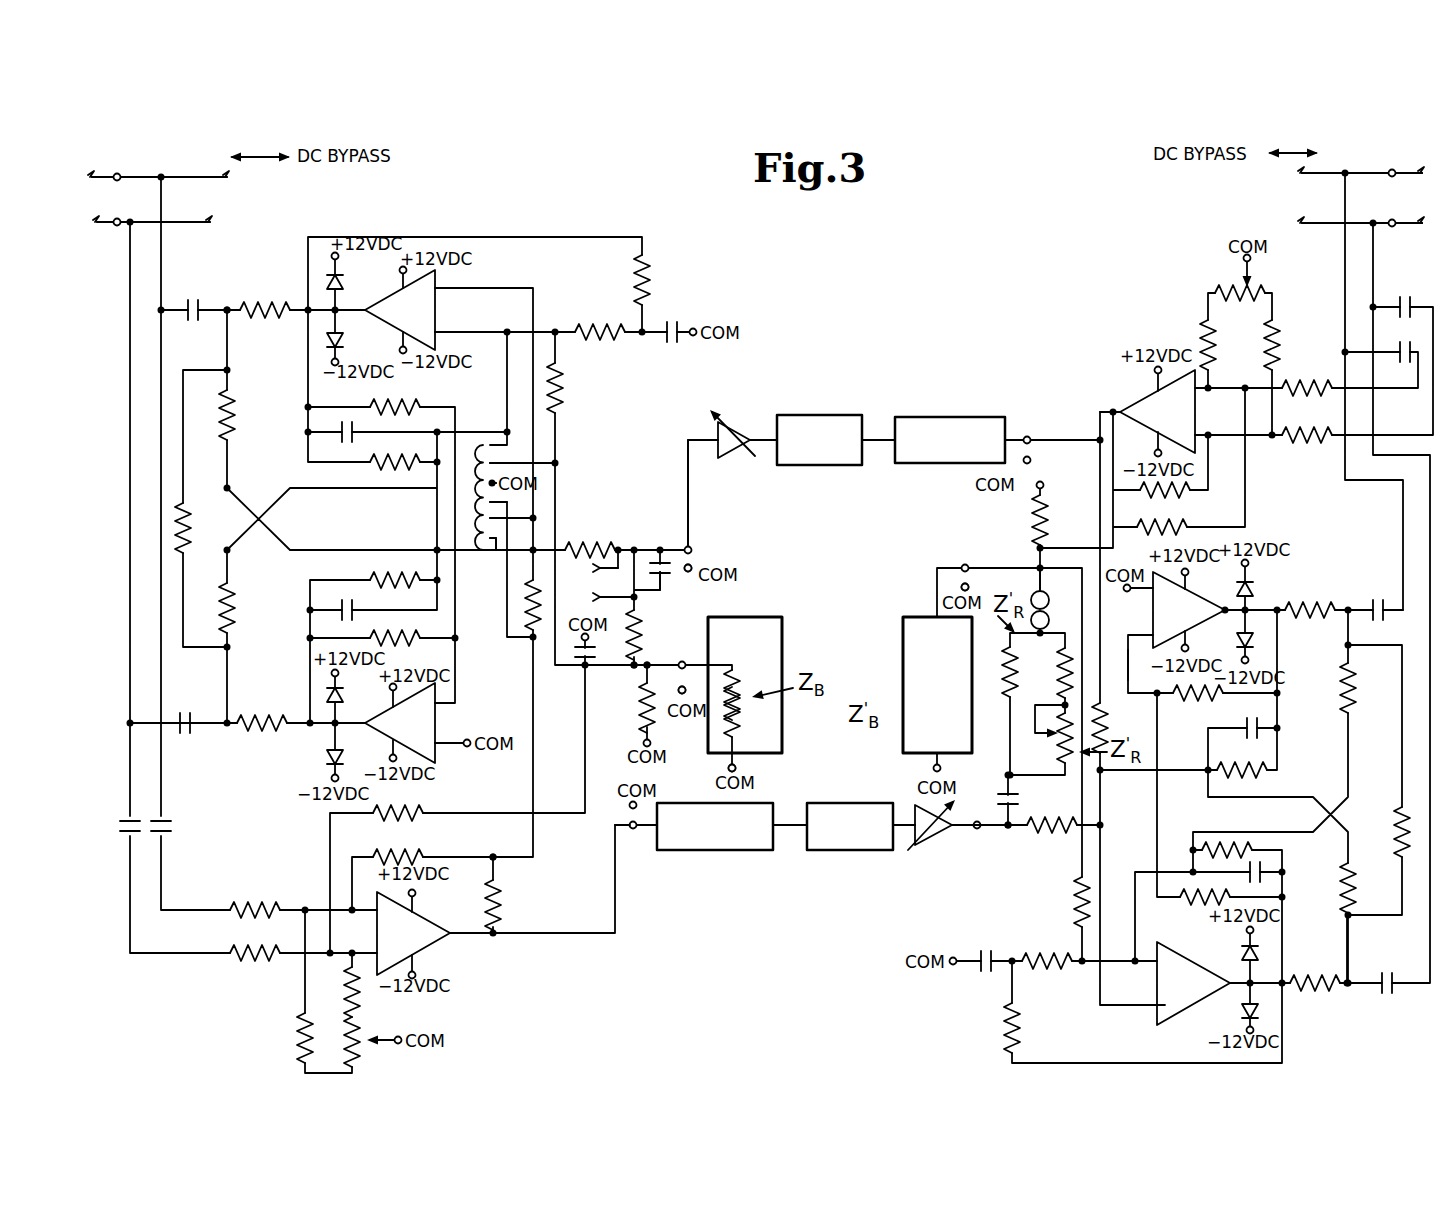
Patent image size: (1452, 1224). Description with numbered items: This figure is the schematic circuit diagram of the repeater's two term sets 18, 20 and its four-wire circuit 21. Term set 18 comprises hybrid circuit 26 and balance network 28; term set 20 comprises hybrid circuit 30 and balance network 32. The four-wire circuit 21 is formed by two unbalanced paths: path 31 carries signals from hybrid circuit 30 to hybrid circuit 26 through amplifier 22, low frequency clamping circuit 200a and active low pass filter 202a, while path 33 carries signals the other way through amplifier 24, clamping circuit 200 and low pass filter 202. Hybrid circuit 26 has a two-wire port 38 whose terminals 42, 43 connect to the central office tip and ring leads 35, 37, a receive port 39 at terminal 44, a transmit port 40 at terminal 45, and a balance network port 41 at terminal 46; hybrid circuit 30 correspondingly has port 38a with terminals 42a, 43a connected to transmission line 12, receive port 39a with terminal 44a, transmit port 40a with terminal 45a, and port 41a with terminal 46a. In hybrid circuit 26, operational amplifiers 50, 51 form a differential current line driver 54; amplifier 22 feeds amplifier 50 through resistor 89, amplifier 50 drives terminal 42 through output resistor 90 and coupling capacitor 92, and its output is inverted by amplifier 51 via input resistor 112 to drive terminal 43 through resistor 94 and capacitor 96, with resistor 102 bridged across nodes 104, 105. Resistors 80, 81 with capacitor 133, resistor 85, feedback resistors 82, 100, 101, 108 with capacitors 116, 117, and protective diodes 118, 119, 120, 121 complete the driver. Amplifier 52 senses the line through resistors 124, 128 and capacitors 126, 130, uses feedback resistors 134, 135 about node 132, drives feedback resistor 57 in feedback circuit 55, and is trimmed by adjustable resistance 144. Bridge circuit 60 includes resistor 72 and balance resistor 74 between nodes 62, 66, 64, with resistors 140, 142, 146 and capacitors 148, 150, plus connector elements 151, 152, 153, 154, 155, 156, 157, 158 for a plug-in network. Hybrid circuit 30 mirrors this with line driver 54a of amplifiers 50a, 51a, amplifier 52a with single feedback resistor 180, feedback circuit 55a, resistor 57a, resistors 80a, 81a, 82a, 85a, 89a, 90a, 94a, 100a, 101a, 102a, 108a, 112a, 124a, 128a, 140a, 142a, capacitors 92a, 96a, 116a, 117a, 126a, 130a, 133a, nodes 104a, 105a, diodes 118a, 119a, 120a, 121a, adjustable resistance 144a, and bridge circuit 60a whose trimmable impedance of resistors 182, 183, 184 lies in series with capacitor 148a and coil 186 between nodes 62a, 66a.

The two-wire transmission line 12 is at (1406, 222).
The term set 18 is at (416, 221).
The term set 20 is at (1130, 328).
The four-wire circuit 21 is at (783, 795).
The amplifier 22 is at (743, 418).
The amplifier 24 is at (926, 845).
The hybrid circuit 26 is at (454, 772).
The balance network 28 is at (790, 620).
The hybrid circuit 30 is at (1290, 1006).
The signal transmission path 31 is at (692, 506).
The balance network 32 is at (896, 603).
The signal transmission path 33 is at (975, 822).
The tip lead 35 is at (112, 174).
The ring lead 37 is at (114, 226).
The two-wire port 38 is at (126, 211).
The two-wire port 38a is at (1392, 209).
The receive port 39 is at (703, 558).
The receive port 39a is at (970, 833).
The transmit port 40 is at (637, 838).
The transmit port 40a is at (1030, 431).
The balance network port 41 is at (675, 677).
The balance network port 41a is at (960, 576).
The terminal 42 is at (118, 175).
The terminal 42a is at (1388, 170).
The terminal 43 is at (130, 226).
The terminal 43a is at (1392, 226).
The terminal 44 is at (691, 550).
The terminal 44a is at (979, 838).
The terminal 45 is at (630, 823).
The terminal 45a is at (1030, 452).
The terminal 46 is at (683, 660).
The terminal 46a is at (965, 564).
The operational amplifier 50 is at (440, 285).
The operational amplifier 50a is at (1153, 984).
The operational amplifier 51 is at (442, 726).
The operational amplifier 51a is at (1197, 597).
The operational amplifier 52 is at (446, 940).
The operational amplifier 52a is at (1148, 397).
The differential current line driver 54 is at (522, 274).
The differential current line driver 54a is at (1294, 563).
The feedback circuit 55 is at (518, 703).
The feedback circuit 55a is at (1106, 636).
The feedback resistor 57 is at (527, 590).
The feedback resistor 57a is at (1101, 725).
The bridge circuit 60 is at (632, 697).
The bridge circuit 60a is at (1010, 556).
The bridge node 62 is at (655, 549).
The bridge node 62a is at (1004, 830).
The node 64 is at (728, 765).
The node 66 is at (630, 668).
The bridge node 66a is at (1062, 596).
The resistor 72 is at (638, 622).
The resistor 74 is at (742, 710).
The resistor 80 is at (649, 272).
The resistor 80a is at (1003, 1029).
The resistor 81 is at (600, 322).
The resistor 81a is at (1038, 950).
The feedback resistor 82 is at (408, 462).
The feedback resistor 82a is at (1230, 846).
The resistor 85 is at (401, 638).
The resistor 85a is at (1200, 698).
The resistor 89 is at (607, 541).
The resistor 89a is at (1044, 835).
The output resistor 90 is at (277, 304).
The output resistor 90a is at (1337, 992).
The coupling capacitor 92 is at (195, 304).
The coupling capacitor 92a is at (1393, 990).
The output resistor 94 is at (258, 716).
The output resistor 94a is at (1317, 603).
The coupling capacitor 96 is at (190, 730).
The coupling capacitor 96a is at (1380, 618).
The feedback resistor 100 is at (228, 403).
The feedback resistor 100a is at (1351, 880).
The feedback resistor 101 is at (229, 595).
The feedback resistor 101a is at (1350, 700).
The resistor 102 is at (184, 520).
The resistor 102a is at (1400, 805).
The node 104 is at (222, 318).
The node 104a is at (1349, 980).
The node 105 is at (212, 716).
The node 105a is at (1362, 603).
The feedback resistor 108 is at (410, 580).
The feedback resistor 108a is at (1270, 770).
The input resistor 112 is at (385, 405).
The input resistor 112a is at (1193, 902).
The capacitor 116 is at (340, 431).
The capacitor 116a is at (1263, 870).
The capacitor 117 is at (342, 608).
The capacitor 117a is at (1249, 726).
The diode 118 is at (342, 280).
The diode 118a is at (1240, 953).
The diode 119 is at (342, 337).
The diode 119a is at (1235, 1012).
The diode 120 is at (343, 690).
The diode 120a is at (1253, 585).
The diode 121 is at (326, 762).
The diode 121a is at (1237, 641).
The input resistor 124 is at (252, 902).
The input resistor 124a is at (1308, 441).
The coupling capacitor 126 is at (172, 816).
The coupling capacitor 126a is at (1402, 301).
The input resistor 128 is at (260, 968).
The input resistor 128a is at (1308, 374).
The coupling capacitor 130 is at (116, 816).
The coupling capacitor 130a is at (1402, 347).
The voltage output node 132 is at (493, 852).
The capacitor 133 is at (672, 324).
The capacitor 133a is at (983, 968).
The feedback resistor 134 is at (392, 850).
The feedback resistor 135 is at (503, 895).
The input resistor 140 is at (388, 813).
The input resistor 140a is at (1190, 512).
The resistor 142 is at (563, 390).
The resistor 142a is at (1078, 897).
The adjustable resistance 144 is at (371, 1057).
The adjustable resistance 144a is at (1234, 284).
The resistor 146 is at (644, 722).
The capacitor 148 is at (664, 574).
The capacitor 148a is at (1016, 802).
The capacitor 150 is at (584, 658).
The connector element 151 is at (485, 437).
The connector element 152 is at (513, 461).
The connector element 153 is at (511, 478).
The connector element 154 is at (521, 502).
The connector element 155 is at (485, 518).
The connector element 156 is at (491, 553).
The connector element 157 is at (597, 600).
The connector element 158 is at (595, 568).
The resistor 180 is at (1135, 496).
The trimmable resistor 182 is at (1052, 749).
The resistor 183 is at (1064, 691).
The resistor 184 is at (1021, 684).
The coil 186 is at (1033, 583).
The low frequency clamping circuit 200 is at (717, 852).
The low frequency clamping circuit 200a is at (932, 416).
The low pass filter 202 is at (850, 852).
The active low pass filter 202a is at (823, 416).